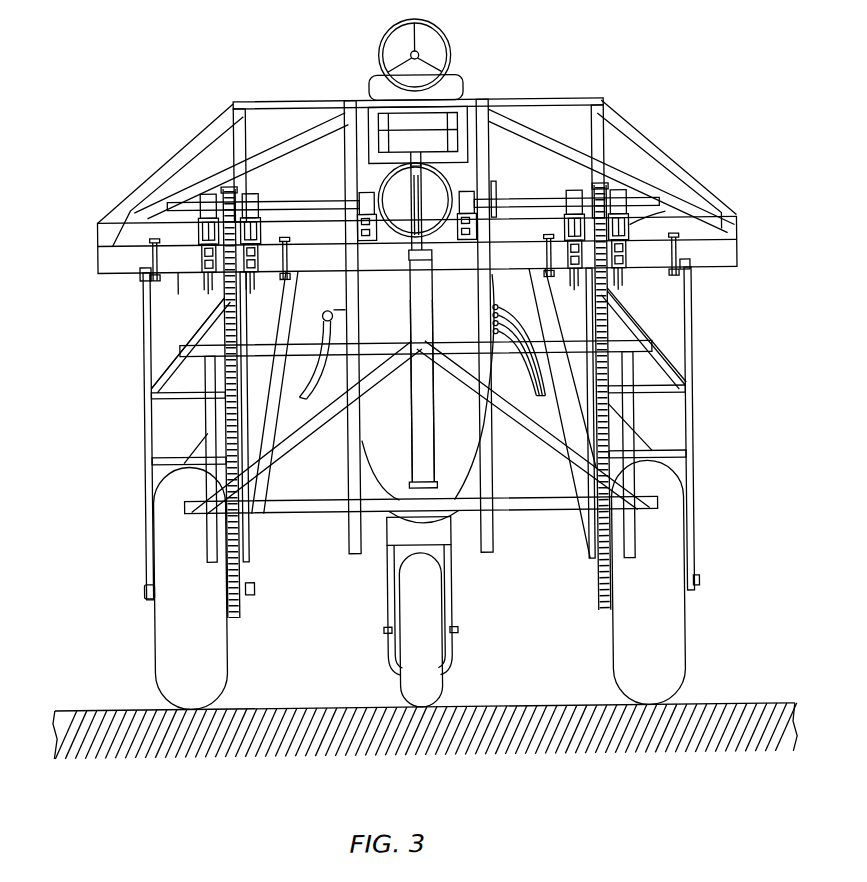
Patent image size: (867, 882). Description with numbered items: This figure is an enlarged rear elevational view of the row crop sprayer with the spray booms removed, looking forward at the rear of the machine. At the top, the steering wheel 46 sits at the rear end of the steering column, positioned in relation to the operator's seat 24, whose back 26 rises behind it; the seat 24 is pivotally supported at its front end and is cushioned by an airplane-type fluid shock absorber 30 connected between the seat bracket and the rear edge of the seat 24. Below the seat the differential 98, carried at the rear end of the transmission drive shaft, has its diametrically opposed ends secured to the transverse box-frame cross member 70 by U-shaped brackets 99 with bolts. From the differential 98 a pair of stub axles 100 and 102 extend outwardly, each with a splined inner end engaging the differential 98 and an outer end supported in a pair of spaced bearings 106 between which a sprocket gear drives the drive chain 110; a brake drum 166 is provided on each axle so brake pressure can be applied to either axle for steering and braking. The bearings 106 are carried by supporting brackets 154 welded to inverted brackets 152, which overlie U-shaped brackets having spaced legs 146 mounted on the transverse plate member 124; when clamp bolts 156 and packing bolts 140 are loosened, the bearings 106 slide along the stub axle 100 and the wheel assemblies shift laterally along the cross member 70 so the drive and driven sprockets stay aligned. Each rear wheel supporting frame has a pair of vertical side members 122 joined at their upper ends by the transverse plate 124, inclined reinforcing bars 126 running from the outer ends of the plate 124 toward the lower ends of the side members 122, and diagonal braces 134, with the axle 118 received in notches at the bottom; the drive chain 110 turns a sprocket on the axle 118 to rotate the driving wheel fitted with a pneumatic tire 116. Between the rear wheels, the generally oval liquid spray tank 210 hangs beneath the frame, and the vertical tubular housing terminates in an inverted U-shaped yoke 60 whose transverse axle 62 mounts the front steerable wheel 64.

The steering wheel 46 is at (445, 40).
The back 26 is at (449, 80).
The operator's seat 24 is at (455, 133).
The differential 98 is at (442, 186).
The shock absorber 30 is at (393, 168).
The brackets 99 is at (464, 208).
The brake drum 166 is at (500, 196).
The stub axle 100 is at (307, 201).
The bearings 106 is at (200, 192).
The clamp bolts 156 is at (566, 228).
The brackets 152 is at (629, 247).
The supporting brackets 154 is at (659, 207).
The stub axle 102 is at (655, 197).
The cross member 70 is at (735, 258).
The packing bolts 140 is at (292, 253).
The transverse plate member 124 is at (180, 281).
The legs 146 is at (260, 288).
The vertical side members 122 is at (262, 342).
The drive chain 110 is at (222, 412).
The diagonal braces 134 is at (672, 370).
The inclined reinforcing bars 126 is at (268, 428).
The liquid spray tank 210 is at (368, 475).
The axle 118 is at (253, 584).
The pneumatic tire 116 is at (217, 650).
The inverted U-shaped yoke 60 is at (448, 560).
The transverse axle 62 is at (457, 630).
The front steerable wheel 64 is at (410, 683).